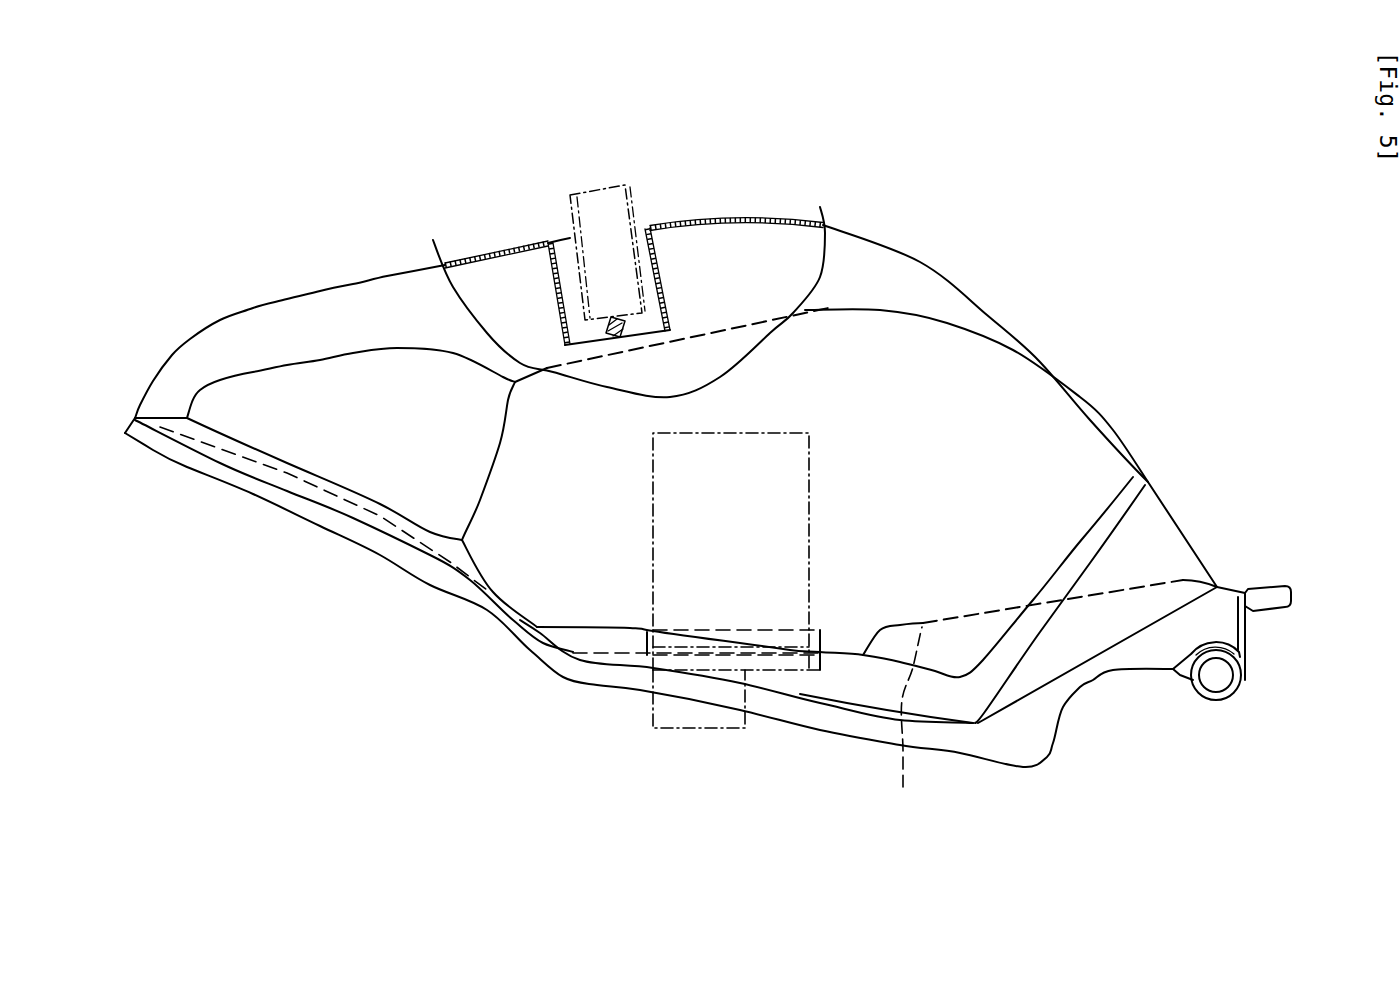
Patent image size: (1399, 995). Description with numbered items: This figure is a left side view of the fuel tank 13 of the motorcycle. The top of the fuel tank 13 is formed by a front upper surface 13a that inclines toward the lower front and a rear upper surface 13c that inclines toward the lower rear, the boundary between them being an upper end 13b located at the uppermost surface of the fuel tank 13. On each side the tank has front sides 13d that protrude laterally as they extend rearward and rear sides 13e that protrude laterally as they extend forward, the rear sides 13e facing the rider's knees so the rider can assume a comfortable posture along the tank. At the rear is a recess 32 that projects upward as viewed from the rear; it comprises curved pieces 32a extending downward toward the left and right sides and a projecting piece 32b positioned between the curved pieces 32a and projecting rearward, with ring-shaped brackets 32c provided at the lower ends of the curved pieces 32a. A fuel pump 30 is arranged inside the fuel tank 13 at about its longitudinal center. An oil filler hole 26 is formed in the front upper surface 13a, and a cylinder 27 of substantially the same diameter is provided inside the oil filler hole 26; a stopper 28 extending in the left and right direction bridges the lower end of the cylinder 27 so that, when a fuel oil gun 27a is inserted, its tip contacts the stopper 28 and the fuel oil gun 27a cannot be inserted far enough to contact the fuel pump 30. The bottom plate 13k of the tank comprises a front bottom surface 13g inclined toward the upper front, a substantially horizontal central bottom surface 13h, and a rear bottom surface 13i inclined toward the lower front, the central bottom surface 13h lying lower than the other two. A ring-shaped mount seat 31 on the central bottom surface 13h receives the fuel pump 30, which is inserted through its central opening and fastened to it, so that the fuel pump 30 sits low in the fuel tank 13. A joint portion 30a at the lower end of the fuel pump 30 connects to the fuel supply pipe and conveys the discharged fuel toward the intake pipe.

The fuel tank 13 is at (967, 188).
The front upper surface 13a is at (328, 290).
The upper end 13b is at (742, 220).
The rear upper surface 13c is at (1040, 357).
The front sides 13d is at (337, 453).
The rear sides 13e is at (530, 573).
The front bottom surface 13g is at (407, 538).
The central bottom surface 13h is at (622, 653).
The rear bottom surface 13i is at (907, 728).
The bottom plate 13k is at (230, 460).
The oil filler hole 26 is at (640, 230).
The cylinder 27 is at (660, 267).
The fuel oil gun 27a is at (570, 227).
The stopper 28 is at (620, 333).
The fuel pump 30 is at (748, 433).
The joint portion 30a is at (698, 730).
The mount seat 31 is at (827, 642).
The recess 32 is at (1242, 572).
The curved pieces 32a is at (1160, 657).
The projecting piece 32b is at (1273, 583).
The ring-shaped brackets 32c is at (1227, 703).